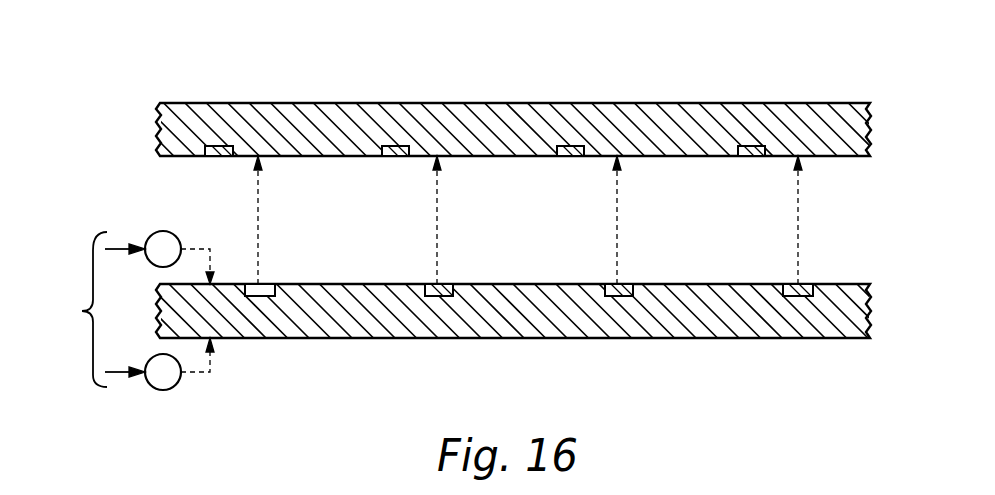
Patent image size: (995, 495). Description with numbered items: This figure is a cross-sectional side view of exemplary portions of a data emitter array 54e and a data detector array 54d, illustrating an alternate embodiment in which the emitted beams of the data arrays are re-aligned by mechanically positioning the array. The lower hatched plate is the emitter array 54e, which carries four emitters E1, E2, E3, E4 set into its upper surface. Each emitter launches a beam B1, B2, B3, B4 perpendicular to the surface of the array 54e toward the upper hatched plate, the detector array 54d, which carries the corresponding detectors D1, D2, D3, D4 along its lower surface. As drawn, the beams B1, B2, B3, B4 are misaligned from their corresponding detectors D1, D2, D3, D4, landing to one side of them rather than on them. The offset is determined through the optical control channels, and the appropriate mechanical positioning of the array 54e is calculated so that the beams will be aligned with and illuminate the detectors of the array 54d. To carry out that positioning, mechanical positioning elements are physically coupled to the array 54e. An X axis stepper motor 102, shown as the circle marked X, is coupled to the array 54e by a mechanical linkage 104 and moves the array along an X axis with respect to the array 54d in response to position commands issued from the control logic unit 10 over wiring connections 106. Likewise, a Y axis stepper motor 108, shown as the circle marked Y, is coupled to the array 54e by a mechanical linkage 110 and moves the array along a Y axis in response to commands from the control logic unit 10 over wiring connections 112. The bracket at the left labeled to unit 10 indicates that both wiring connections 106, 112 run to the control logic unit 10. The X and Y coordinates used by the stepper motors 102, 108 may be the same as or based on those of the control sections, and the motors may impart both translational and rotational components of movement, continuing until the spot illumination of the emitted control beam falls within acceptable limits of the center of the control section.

The detector array 54d is at (160, 130).
The emitter array 54e is at (852, 338).
The detector D1 is at (218, 146).
The detector D2 is at (395, 146).
The detector D3 is at (570, 146).
The detector D4 is at (755, 146).
The emitter E1 is at (263, 297).
The emitter E2 is at (443, 297).
The emitter E3 is at (613, 297).
The emitter E4 is at (793, 297).
The beam B1 is at (258, 225).
The beam B2 is at (437, 242).
The beam B3 is at (617, 225).
The beam B4 is at (798, 250).
The Y axis stepper motor 108 is at (163, 231).
The X axis stepper motor 102 is at (158, 390).
The wiring connections 112 is at (113, 244).
The wiring connections 106 is at (118, 374).
The mechanical linkage 110 is at (198, 249).
The mechanical linkage 104 is at (200, 374).
The control logic unit 10 is at (66, 309).